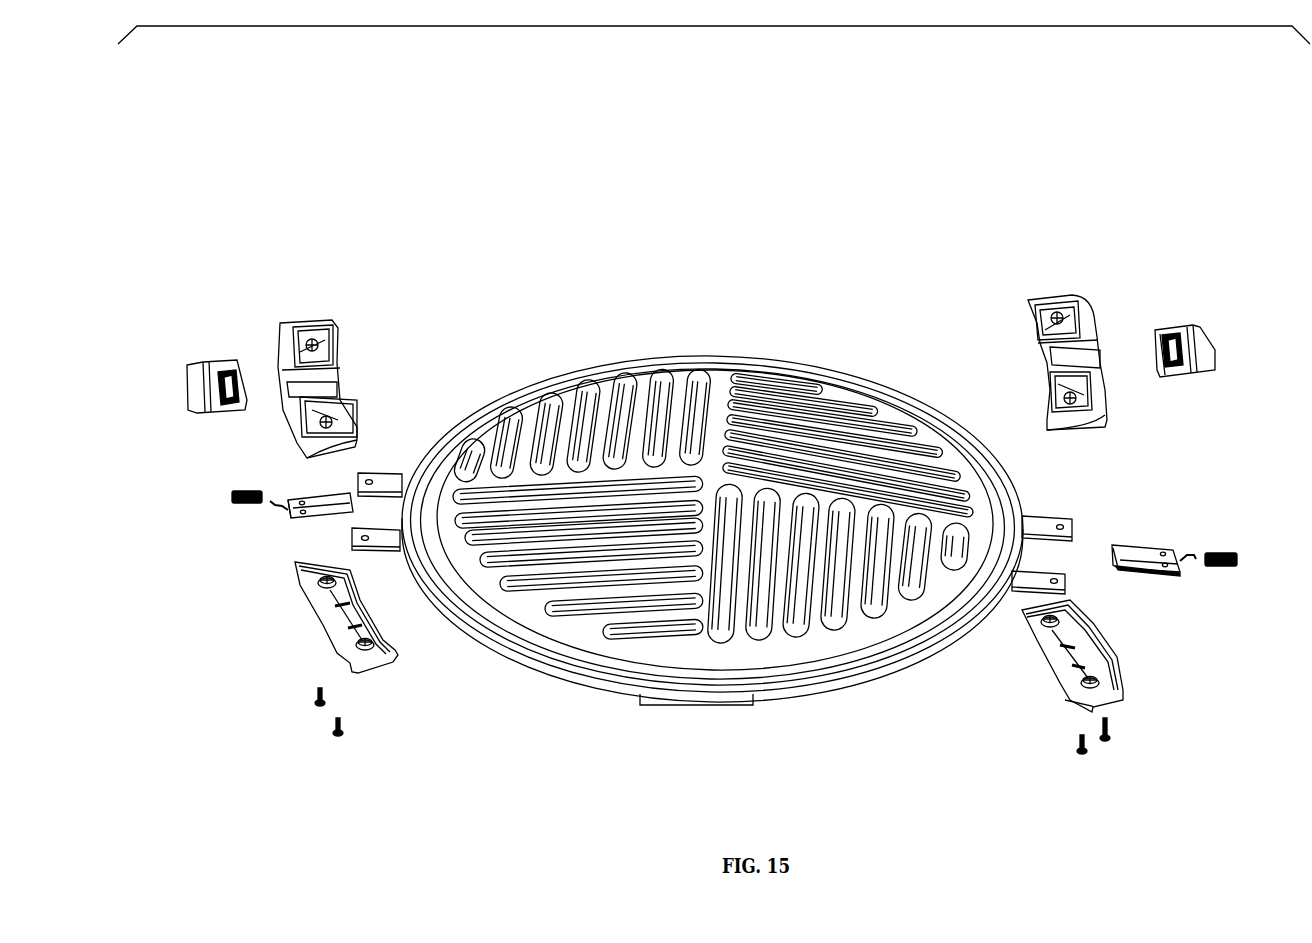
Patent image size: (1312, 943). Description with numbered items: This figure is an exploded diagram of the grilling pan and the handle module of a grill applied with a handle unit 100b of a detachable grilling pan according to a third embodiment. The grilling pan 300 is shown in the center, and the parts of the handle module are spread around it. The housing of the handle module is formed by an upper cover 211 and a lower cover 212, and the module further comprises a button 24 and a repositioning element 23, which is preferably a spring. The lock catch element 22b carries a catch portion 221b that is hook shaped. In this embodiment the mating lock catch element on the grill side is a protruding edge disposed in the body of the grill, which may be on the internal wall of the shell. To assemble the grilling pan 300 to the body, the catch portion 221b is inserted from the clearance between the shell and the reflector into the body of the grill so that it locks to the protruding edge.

The handle unit 100b is at (758, 90).
The grilling pan 300 is at (767, 372).
The upper cover 211 is at (1060, 300).
The lower cover 212 is at (1057, 678).
The button 24 is at (1200, 348).
The lock catch element 22b is at (1135, 558).
The catch portion 221b is at (1128, 572).
The repositioning element 23 is at (1227, 555).